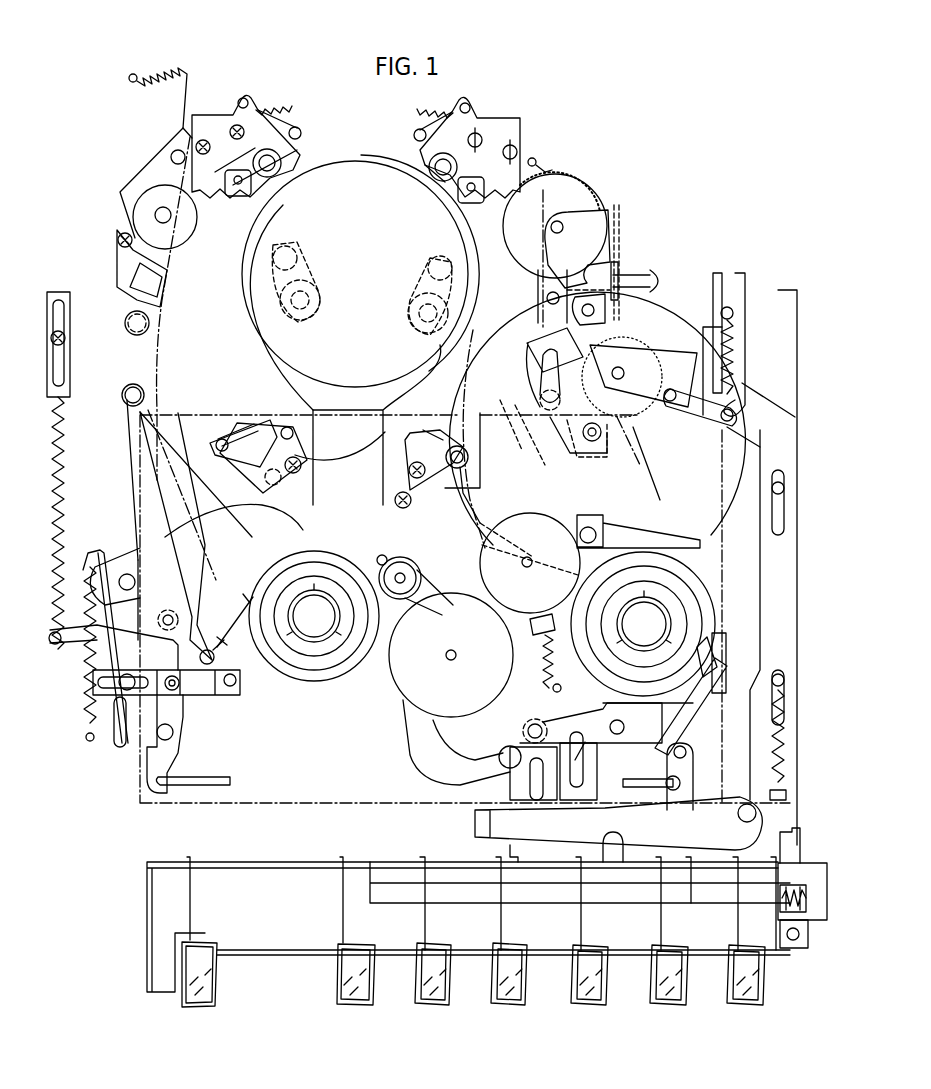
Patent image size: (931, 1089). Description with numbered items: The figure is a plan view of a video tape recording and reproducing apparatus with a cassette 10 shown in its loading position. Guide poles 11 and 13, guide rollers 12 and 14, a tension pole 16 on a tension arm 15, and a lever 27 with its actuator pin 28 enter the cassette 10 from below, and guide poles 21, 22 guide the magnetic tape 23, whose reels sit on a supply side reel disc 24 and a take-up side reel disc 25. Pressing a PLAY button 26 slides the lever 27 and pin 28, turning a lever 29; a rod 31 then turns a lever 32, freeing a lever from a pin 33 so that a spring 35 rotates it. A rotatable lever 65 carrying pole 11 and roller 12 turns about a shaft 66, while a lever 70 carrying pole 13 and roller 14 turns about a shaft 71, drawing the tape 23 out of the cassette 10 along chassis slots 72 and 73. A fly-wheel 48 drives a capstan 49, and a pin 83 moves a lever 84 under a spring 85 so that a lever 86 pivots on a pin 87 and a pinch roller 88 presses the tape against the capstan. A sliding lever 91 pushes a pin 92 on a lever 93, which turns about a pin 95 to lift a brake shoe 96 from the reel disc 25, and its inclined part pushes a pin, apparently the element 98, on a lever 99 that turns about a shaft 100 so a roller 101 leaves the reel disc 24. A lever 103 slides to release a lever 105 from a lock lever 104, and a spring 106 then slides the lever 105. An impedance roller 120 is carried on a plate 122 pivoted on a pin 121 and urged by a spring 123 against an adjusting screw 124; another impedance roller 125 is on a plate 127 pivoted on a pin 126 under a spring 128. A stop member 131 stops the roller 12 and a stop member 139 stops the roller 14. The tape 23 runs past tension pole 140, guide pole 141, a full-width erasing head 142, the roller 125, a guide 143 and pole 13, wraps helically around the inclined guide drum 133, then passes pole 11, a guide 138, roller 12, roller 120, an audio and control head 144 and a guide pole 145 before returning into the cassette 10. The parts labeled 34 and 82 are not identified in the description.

The cassette 10 is at (140, 803).
The guide pole 11 is at (440, 428).
The guide roller 12 is at (465, 440).
The guide pole 13 is at (245, 425).
The guide roller 14 is at (218, 438).
The tension arm 15 is at (225, 528).
The tension pole 16 is at (283, 420).
The guide pole 21 is at (155, 410).
The guide pole 22 is at (633, 440).
The magnetic tape 23 is at (188, 400).
The supply side reel disc 24 is at (305, 690).
The take-up side reel disc 25 is at (595, 660).
The PLAY button 26 is at (600, 980).
The lever 27 is at (585, 770).
The actuator pin 28 is at (613, 862).
The lever 29 is at (733, 800).
The rod 31 is at (220, 780).
The lever 32 is at (178, 758).
The pin 33 is at (178, 702).
The arm 34 is at (190, 604).
The spring 35 is at (62, 458).
The fly-wheel 48 is at (515, 322).
The capstan 49 is at (580, 460).
The rotatable lever 65 is at (262, 362).
The shaft 66 is at (318, 298).
The rotatable lever 70 is at (418, 342).
The shaft 71 is at (420, 310).
The slot 72 is at (522, 434).
The slot 73 is at (165, 345).
The spring 82 is at (82, 730).
The pin 83 is at (720, 313).
The lever 84 is at (745, 305).
The spring 85 is at (738, 366).
The lever 86 is at (733, 420).
The pin 87 is at (672, 403).
The pinch roller 88 is at (598, 385).
The lever 91 is at (510, 848).
The pin 92 is at (525, 728).
The lever 93 is at (550, 718).
The pin 95 is at (622, 733).
The brake shoe 96 is at (705, 690).
The roller 98 is at (500, 752).
The lever 99 is at (410, 745).
The shaft 100 is at (465, 645).
The roller 101 is at (410, 565).
The lever 103 is at (807, 945).
The lock lever 104 is at (800, 860).
The lever 105 is at (762, 603).
The spring 106 is at (790, 784).
The impedance roller 120 is at (583, 190).
The pin 121 is at (594, 308).
The plate 122 is at (612, 236).
The spring 123 is at (550, 172).
The adjusting screw 124 is at (632, 280).
The impedance roller 125 is at (133, 217).
The pin 126 is at (170, 152).
The plate 127 is at (118, 188).
The spring 128 is at (165, 78).
The stop member 131 is at (490, 160).
The guide drum 133 is at (246, 290).
The guide 138 is at (470, 203).
The stop member 139 is at (222, 150).
The tension pole 140 is at (124, 390).
The guide pole 141 is at (125, 323).
The full-width erasing head 142 is at (160, 290).
The guide 143 is at (240, 196).
The recording and reproducing head 144 is at (540, 360).
The guide pole 145 is at (563, 429).